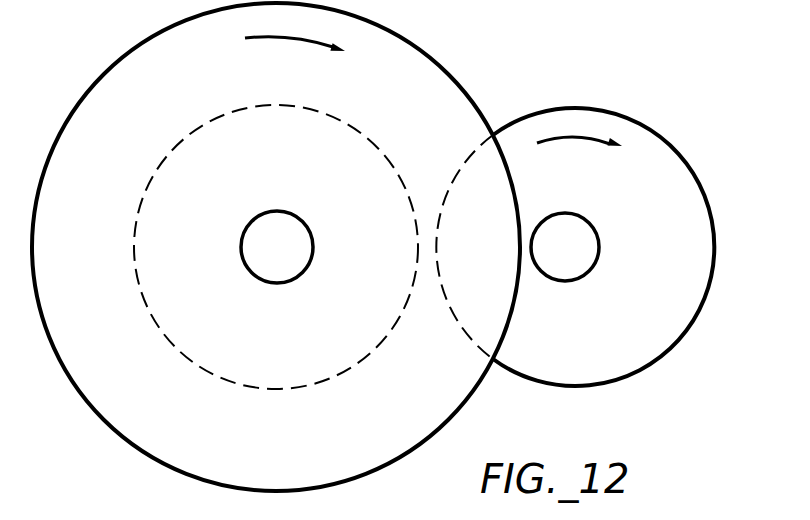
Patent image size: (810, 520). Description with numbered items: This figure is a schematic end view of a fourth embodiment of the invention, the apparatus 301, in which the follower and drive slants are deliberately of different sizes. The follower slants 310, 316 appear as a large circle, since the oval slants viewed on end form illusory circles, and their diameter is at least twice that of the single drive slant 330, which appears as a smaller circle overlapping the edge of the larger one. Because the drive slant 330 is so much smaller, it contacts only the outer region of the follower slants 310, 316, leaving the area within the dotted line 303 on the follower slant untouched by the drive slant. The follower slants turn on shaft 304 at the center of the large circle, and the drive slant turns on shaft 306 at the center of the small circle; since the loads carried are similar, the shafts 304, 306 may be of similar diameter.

The apparatus 301 is at (603, 70).
The dotted line 303 is at (371, 150).
The shaft 304 is at (267, 230).
The shaft 306 is at (557, 270).
The follower slant 310 is at (390, 48).
The follower slant 316 is at (453, 122).
The drive slant 330 is at (602, 123).